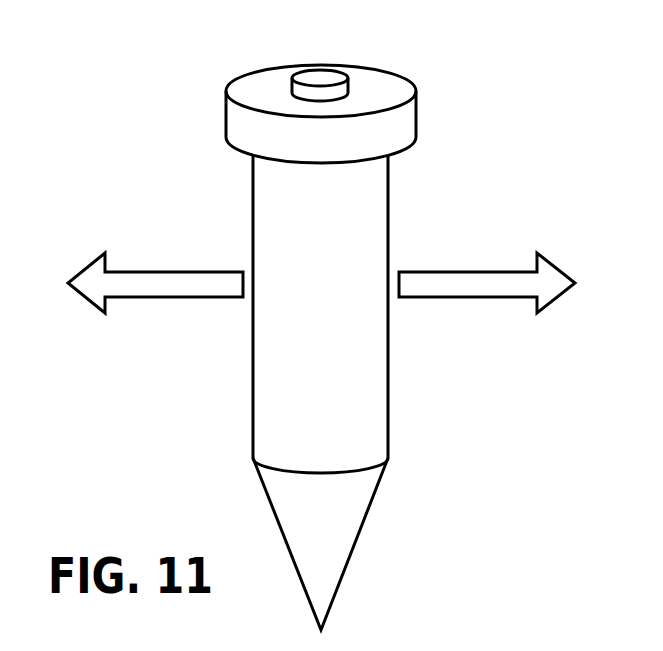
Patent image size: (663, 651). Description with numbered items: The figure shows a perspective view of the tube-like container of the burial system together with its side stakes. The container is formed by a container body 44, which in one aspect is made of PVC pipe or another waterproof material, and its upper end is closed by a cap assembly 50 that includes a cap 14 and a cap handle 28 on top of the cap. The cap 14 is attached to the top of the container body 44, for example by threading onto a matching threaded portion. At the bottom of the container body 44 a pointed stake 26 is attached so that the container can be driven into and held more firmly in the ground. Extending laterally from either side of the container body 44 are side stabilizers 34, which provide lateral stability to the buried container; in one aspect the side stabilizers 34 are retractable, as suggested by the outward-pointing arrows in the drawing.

The cap 14 is at (415, 103).
The cap assembly 50 is at (248, 83).
The cap handle 28 is at (328, 72).
The container body 44 is at (368, 198).
The stake 26 is at (352, 532).
The side stabilizers 34 is at (137, 297).